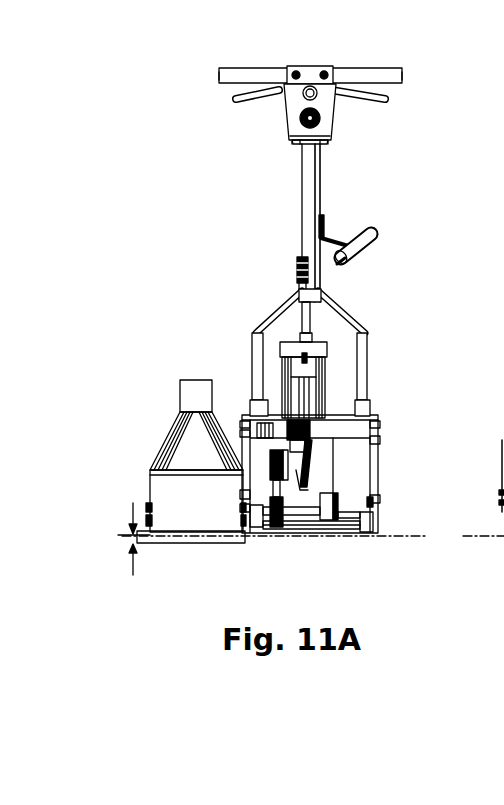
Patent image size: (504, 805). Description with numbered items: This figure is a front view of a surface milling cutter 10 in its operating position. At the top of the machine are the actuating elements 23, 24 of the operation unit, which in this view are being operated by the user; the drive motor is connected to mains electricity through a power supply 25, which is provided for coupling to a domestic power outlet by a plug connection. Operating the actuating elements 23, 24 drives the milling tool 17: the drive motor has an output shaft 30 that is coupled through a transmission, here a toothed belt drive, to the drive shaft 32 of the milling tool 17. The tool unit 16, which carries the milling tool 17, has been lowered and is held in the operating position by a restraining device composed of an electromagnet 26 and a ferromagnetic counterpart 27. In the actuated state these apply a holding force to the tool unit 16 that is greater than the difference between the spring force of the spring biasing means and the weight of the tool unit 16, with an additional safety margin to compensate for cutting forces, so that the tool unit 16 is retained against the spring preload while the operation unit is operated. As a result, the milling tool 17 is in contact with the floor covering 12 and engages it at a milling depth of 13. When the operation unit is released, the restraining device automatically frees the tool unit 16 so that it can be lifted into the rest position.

The surface milling cutter 10 is at (105, 146).
The floor covering 12 is at (418, 537).
The milling depth 13 is at (238, 48).
The tool unit 16 is at (345, 452).
The milling tool 17 is at (197, 544).
The actuating element 23 is at (389, 100).
The actuating element 24 is at (233, 104).
The power supply 25 is at (297, 283).
The electromagnet 26 is at (374, 518).
The ferromagnetic counterpart 27 is at (372, 502).
The output shaft 30 is at (263, 460).
The drive shaft 32 is at (303, 508).